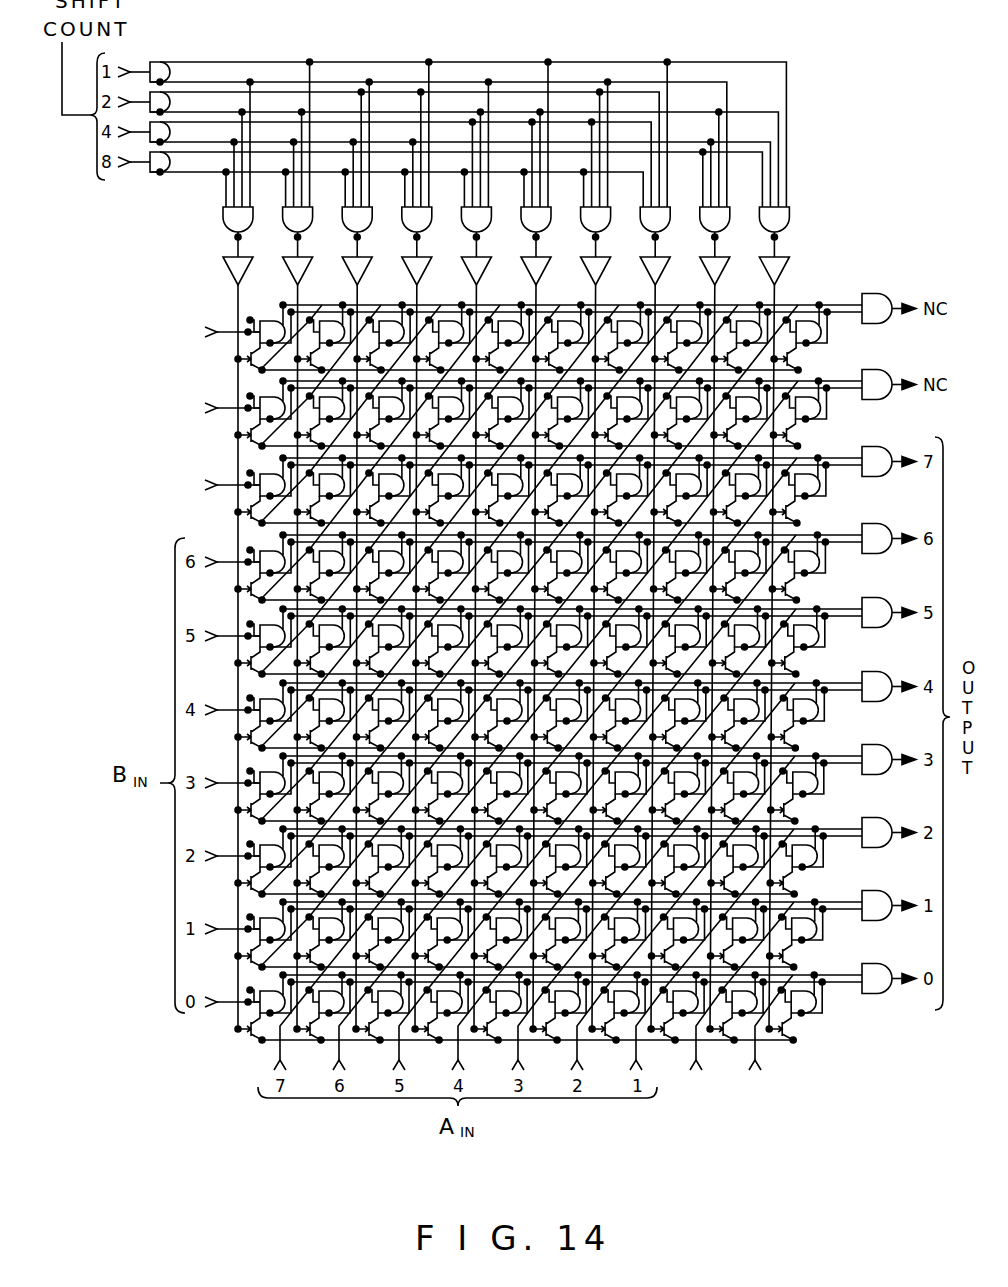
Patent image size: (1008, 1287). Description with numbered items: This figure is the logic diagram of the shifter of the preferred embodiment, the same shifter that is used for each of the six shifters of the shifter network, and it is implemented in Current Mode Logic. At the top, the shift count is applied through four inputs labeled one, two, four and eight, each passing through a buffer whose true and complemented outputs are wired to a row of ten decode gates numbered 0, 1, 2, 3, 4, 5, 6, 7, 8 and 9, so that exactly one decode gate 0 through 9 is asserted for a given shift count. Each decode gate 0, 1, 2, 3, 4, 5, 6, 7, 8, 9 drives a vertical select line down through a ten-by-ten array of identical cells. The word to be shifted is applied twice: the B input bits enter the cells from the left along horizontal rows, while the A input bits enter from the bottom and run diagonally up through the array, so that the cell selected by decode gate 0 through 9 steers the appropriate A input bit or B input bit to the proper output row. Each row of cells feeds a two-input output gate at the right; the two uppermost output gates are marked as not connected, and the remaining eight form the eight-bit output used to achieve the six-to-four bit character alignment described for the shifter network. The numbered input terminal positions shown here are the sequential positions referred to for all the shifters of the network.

The shift count decode gate 0 is at (238, 246).
The shift count decode gate 1 is at (298, 246).
The shift count decode gate 2 is at (357, 246).
The shift count decode gate 3 is at (417, 246).
The shift count decode gate 4 is at (476, 246).
The shift count decode gate 5 is at (536, 246).
The shift count decode gate 6 is at (596, 246).
The shift count decode gate 7 is at (655, 246).
The shift count decode gate 8 is at (715, 246).
The shift count decode gate 9 is at (774, 246).